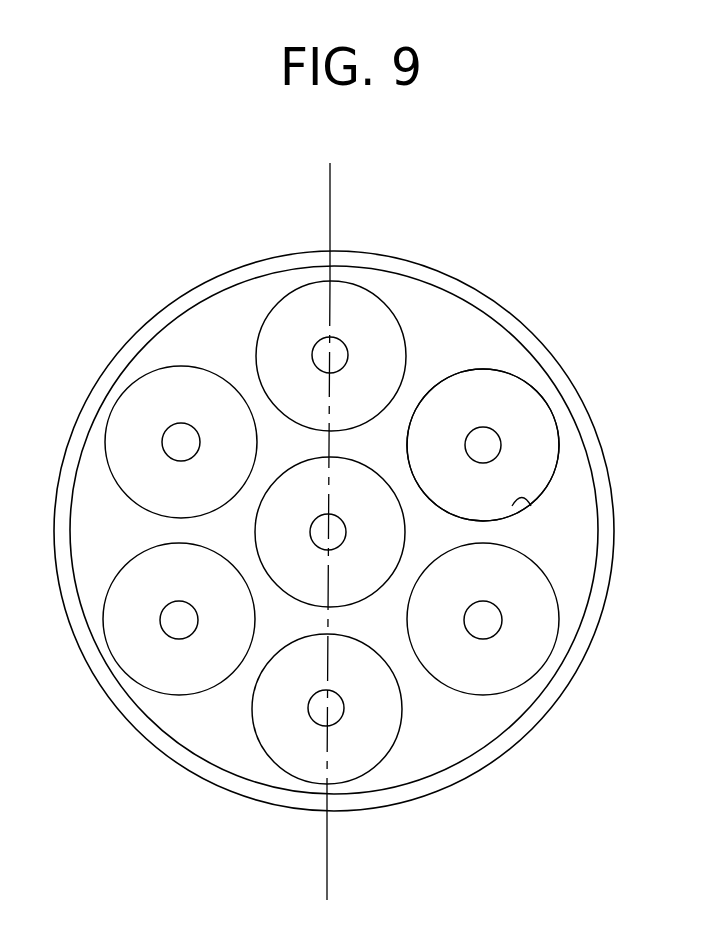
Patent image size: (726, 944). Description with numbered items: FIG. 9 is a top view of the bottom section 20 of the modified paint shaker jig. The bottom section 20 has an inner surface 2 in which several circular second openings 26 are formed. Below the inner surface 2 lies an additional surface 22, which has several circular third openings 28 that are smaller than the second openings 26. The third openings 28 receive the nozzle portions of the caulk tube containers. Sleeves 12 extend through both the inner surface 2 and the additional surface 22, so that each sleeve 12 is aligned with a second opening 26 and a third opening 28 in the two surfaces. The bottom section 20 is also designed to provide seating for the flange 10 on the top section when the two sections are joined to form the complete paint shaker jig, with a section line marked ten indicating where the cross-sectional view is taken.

The bottom section 20 is at (591, 704).
The inner surface 2 is at (453, 318).
The sleeves 12 is at (477, 370).
The additional surface 22 is at (533, 433).
The third openings 28 is at (480, 464).
The second openings 26 is at (531, 506).
The flange 10 is at (330, 163).